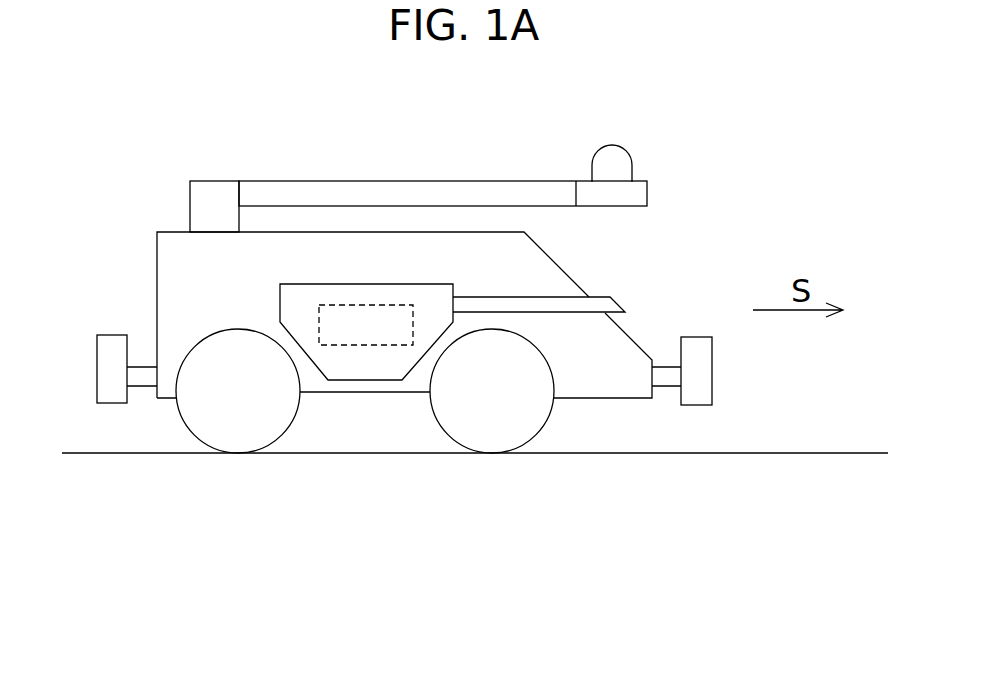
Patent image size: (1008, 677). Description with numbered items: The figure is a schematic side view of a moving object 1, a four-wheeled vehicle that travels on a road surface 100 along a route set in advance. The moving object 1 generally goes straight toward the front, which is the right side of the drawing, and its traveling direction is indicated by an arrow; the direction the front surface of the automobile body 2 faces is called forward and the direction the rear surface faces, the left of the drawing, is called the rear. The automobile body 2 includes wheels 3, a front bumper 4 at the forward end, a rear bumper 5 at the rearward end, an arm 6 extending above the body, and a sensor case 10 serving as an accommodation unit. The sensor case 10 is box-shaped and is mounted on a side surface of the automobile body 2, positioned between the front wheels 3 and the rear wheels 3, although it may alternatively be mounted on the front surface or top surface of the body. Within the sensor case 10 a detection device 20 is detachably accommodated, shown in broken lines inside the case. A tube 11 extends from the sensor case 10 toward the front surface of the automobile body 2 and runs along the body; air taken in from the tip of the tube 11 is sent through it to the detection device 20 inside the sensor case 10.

The moving object 1 is at (163, 115).
The automobile body 2 is at (157, 269).
The wheels 3 is at (238, 433).
The front bumper 4 is at (705, 364).
The rear bumper 5 is at (107, 362).
The arm 6 is at (417, 190).
The sensor case 10 is at (422, 284).
The tube 11 is at (622, 298).
The detection device 20 is at (359, 305).
The road surface 100 is at (783, 453).